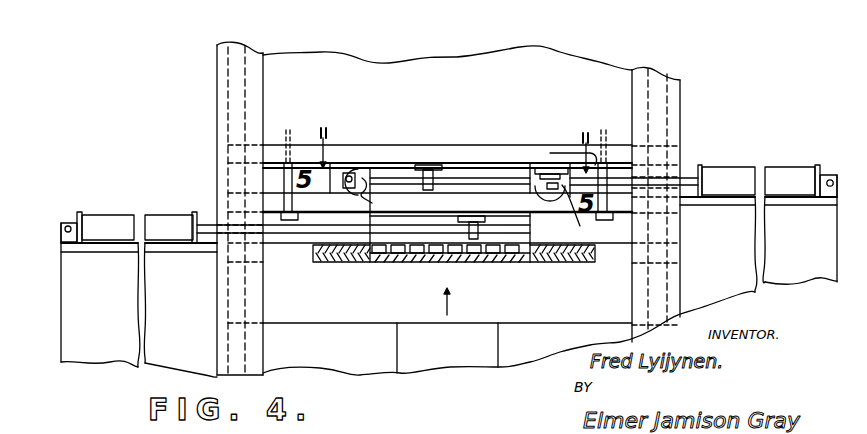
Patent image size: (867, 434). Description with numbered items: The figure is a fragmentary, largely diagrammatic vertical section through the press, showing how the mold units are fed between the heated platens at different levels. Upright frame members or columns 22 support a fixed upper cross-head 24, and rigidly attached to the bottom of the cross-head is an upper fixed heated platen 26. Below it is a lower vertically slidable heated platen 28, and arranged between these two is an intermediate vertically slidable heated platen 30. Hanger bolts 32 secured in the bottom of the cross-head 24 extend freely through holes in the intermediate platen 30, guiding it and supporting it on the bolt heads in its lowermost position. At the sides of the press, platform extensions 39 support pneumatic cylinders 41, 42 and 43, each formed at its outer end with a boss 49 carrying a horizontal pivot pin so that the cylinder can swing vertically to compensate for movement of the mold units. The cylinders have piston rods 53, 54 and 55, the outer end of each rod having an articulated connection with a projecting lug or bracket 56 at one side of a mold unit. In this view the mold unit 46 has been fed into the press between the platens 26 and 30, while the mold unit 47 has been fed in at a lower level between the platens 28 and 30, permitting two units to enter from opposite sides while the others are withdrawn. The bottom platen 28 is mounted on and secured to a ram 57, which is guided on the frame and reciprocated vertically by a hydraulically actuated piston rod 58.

The upright frame members or columns 22 is at (221, 71).
The fixed upper cross-head 24 is at (450, 67).
The upper fixed heated platen 26 is at (452, 150).
The lower vertically slidable heated platen 28 is at (306, 257).
The intermediate vertically slidable heated platen 30 is at (544, 205).
The hanger bolts 32 is at (284, 173).
The platform extensions 39 is at (92, 252).
The pneumatic cylinder 41 is at (481, 209).
The pneumatic cylinder 42 is at (730, 170).
The pneumatic cylinder 43 is at (97, 213).
The mold unit 46 is at (500, 167).
The mold unit 47 is at (503, 237).
The boss 49 is at (67, 214).
The piston rod 53 is at (352, 176).
The piston rod 54 is at (462, 181).
The piston rod 55 is at (287, 232).
The projecting lug or bracket 56 is at (428, 174).
The ram 57 is at (550, 316).
The hydraulically actuated piston rod 58 is at (405, 349).